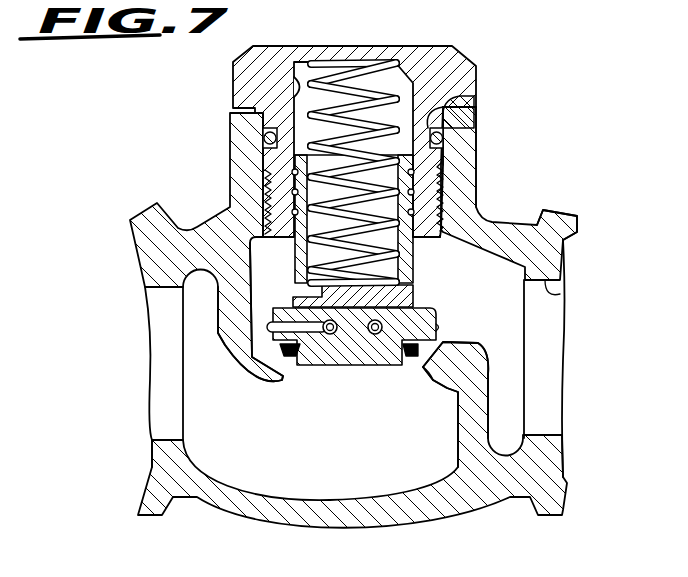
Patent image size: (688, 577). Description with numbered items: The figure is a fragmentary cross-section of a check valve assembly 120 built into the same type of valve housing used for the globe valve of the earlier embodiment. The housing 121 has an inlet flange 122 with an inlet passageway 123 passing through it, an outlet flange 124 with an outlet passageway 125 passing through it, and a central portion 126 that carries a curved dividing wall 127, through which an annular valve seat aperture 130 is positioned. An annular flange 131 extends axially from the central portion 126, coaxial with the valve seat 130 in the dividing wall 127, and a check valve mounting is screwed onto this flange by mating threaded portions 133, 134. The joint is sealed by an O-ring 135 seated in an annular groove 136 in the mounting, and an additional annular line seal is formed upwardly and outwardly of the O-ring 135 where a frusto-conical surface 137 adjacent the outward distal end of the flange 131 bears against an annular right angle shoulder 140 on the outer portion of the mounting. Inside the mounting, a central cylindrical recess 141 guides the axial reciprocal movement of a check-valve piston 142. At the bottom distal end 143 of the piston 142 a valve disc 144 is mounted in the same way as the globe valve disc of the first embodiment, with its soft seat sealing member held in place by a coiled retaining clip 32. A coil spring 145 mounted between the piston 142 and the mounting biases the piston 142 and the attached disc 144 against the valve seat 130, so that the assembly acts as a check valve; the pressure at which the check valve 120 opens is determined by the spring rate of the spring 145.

The coiled retaining clip 32 is at (400, 46).
The check valve assembly 120 is at (555, 148).
The housing 121 is at (512, 216).
The inlet flange 122 is at (160, 268).
The inlet passageway 123 is at (168, 287).
The outlet flange 124 is at (566, 230).
The outlet passageway 125 is at (561, 290).
The central portion 126 is at (455, 506).
The curved dividing wall 127 is at (471, 364).
The annular valve seat aperture 130 is at (430, 381).
The annular flange 131 is at (470, 176).
The threaded portion 133 is at (444, 214).
The threaded portion 134 is at (428, 238).
The O-ring 135 is at (437, 141).
The annular groove 136 is at (449, 113).
The frusto-conical surface 137 is at (470, 121).
The annular right angle shoulder 140 is at (452, 109).
The central cylindrical recess 141 is at (300, 78).
The check-valve piston 142 is at (409, 288).
The bottom distal end 143 is at (360, 341).
The valve disc 144 is at (328, 360).
The coil spring 145 is at (345, 75).